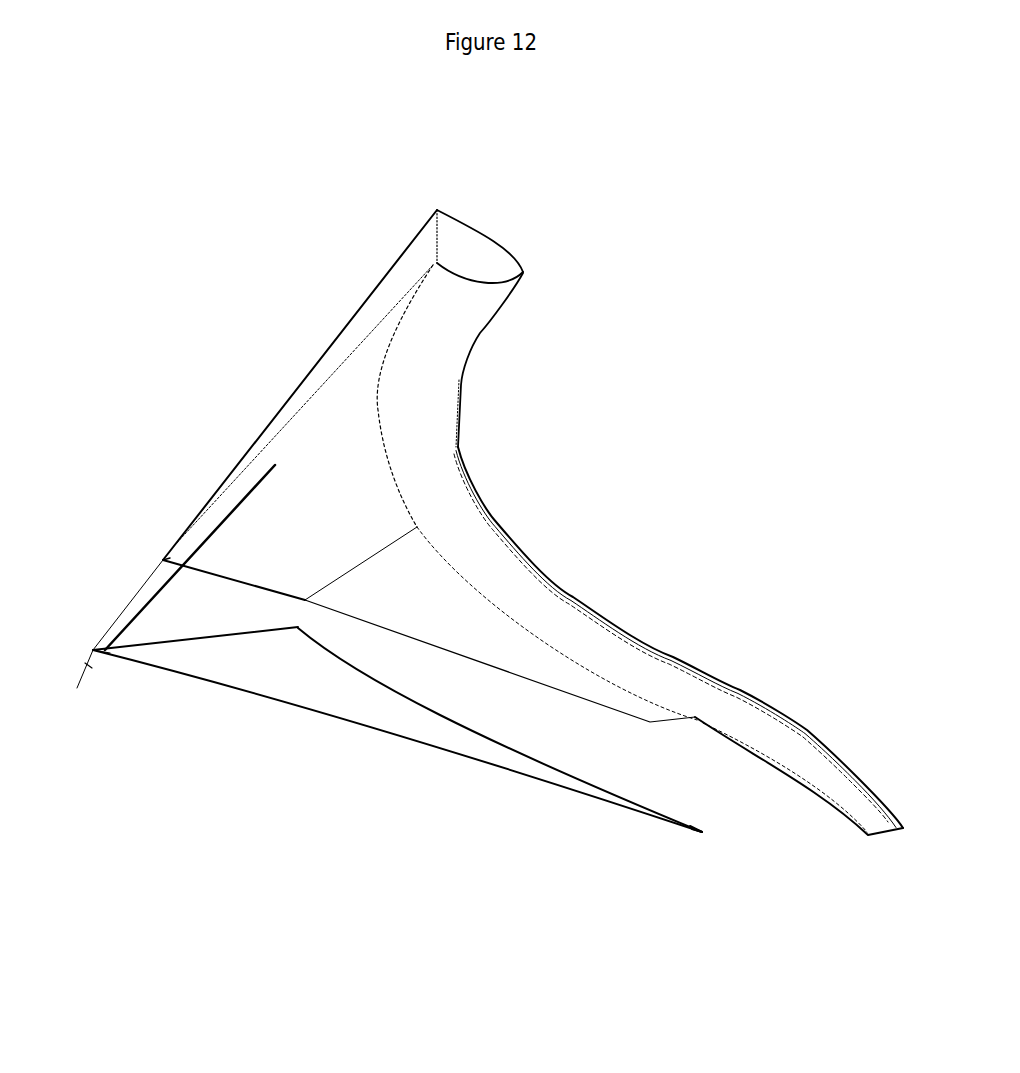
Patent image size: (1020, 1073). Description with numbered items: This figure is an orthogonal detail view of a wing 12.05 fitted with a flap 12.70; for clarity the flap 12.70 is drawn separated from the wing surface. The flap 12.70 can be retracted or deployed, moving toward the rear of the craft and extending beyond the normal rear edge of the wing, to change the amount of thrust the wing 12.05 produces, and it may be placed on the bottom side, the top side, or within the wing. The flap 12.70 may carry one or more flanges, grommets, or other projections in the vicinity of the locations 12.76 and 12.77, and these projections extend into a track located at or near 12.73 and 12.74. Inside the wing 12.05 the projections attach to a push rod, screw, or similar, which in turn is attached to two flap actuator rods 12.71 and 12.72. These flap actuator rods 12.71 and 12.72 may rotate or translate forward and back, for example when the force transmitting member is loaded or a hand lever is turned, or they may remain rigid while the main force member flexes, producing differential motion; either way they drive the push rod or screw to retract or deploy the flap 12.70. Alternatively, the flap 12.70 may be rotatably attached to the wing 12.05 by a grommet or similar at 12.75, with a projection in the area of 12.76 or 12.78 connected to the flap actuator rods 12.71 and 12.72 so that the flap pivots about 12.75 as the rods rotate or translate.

The wing 12.05 is at (620, 630).
The flap 12.70 is at (237, 660).
The flap actuator rod 12.71 is at (460, 233).
The flap actuator rod 12.72 is at (458, 260).
The track location 12.73 is at (418, 527).
The track location 12.74 is at (695, 717).
The grommet location 12.75 is at (702, 832).
The projection location 12.76 is at (300, 628).
The projection location 12.77 is at (620, 789).
The projection location 12.78 is at (93, 650).